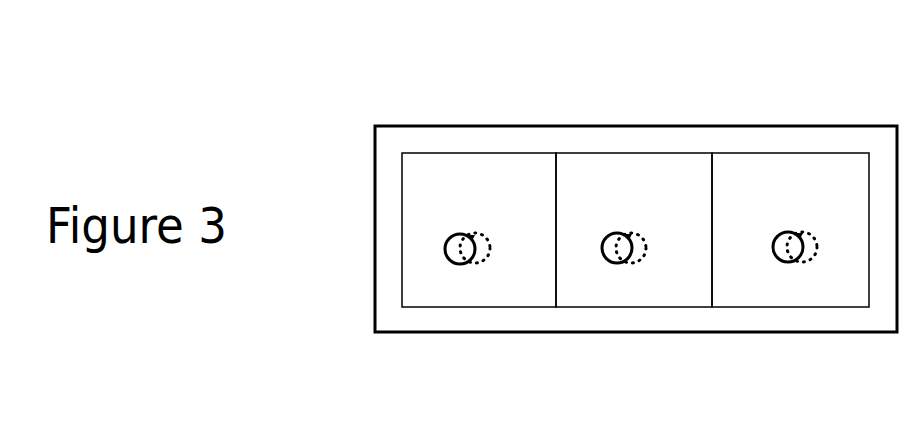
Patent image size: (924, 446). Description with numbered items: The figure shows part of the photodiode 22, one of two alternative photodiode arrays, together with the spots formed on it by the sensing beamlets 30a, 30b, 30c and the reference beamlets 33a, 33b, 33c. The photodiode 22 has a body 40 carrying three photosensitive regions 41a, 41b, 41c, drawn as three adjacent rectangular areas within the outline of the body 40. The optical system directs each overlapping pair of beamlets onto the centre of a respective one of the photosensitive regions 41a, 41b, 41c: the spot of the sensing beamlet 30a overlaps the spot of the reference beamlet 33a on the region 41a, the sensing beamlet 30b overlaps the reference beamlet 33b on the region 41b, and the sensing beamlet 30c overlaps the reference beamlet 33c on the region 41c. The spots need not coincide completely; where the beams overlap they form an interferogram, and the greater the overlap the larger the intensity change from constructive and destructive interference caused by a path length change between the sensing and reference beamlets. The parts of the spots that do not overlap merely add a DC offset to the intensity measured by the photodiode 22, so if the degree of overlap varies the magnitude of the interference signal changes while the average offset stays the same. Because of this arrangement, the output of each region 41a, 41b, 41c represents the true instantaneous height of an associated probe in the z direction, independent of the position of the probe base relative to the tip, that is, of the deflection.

The photodiode 22 is at (486, 104).
The body 40 is at (725, 127).
The photosensitive region 41a is at (503, 290).
The photosensitive region 41b is at (676, 293).
The photosensitive region 41c is at (759, 292).
The sensing beamlet 30a is at (452, 235).
The sensing beamlet 30b is at (606, 235).
The sensing beamlet 30c is at (775, 235).
The reference beamlet 33a is at (489, 232).
The reference beamlet 33b is at (647, 232).
The reference beamlet 33c is at (808, 232).